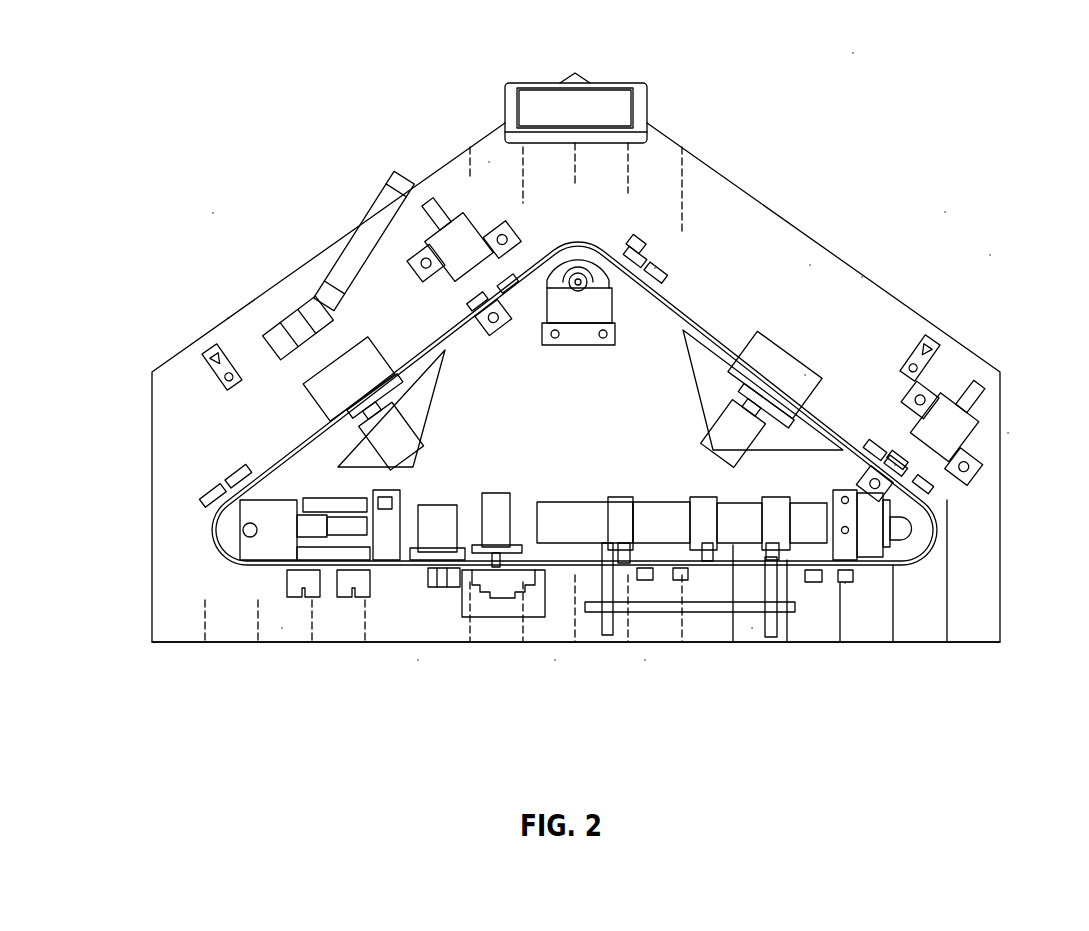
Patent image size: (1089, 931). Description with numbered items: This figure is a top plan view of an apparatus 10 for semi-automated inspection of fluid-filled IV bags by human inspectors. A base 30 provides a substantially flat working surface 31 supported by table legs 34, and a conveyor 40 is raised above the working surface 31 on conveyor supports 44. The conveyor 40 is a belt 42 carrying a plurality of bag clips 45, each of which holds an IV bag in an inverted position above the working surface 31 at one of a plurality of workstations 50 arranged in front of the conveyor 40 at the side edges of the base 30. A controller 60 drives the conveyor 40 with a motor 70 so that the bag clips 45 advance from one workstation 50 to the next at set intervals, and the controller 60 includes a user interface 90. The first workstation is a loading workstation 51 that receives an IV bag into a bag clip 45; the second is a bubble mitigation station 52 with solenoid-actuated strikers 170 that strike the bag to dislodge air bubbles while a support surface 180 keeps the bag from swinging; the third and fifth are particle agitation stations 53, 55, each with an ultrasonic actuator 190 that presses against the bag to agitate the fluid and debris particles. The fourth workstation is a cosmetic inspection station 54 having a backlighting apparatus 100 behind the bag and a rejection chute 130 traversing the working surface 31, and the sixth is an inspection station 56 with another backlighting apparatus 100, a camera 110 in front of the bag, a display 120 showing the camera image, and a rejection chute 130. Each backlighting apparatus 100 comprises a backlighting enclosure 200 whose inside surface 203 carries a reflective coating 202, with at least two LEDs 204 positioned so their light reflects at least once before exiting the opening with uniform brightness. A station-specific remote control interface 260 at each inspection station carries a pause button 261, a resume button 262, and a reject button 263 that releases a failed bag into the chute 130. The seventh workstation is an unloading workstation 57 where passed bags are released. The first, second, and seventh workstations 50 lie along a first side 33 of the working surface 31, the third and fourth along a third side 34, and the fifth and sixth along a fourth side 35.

The apparatus 10 is at (855, 52).
The base 30 is at (706, 115).
The working surface 31 is at (601, 218).
The first side 33 is at (868, 645).
The third side 34 is at (862, 277).
The fourth side 35 is at (228, 318).
The conveyor 40 is at (602, 473).
The belt 42 is at (907, 568).
The conveyor supports 44 is at (278, 505).
The bag clips 45 is at (655, 268).
The workstations 50 is at (990, 255).
The loading workstation 51 is at (418, 660).
The bubble mitigation station 52 is at (945, 212).
The particle agitation station 53 is at (1008, 434).
The cosmetic inspection station 54 is at (810, 265).
The particle agitation station 55 is at (489, 160).
The inspection station 56 is at (213, 213).
The unloading workstation 57 is at (282, 628).
The controller 60 is at (628, 88).
The motor 70 is at (577, 285).
The user interface 90 is at (523, 97).
The backlighting apparatus 100 is at (590, 404).
The camera 110 is at (290, 342).
The display 120 is at (388, 182).
The rejection chute 130 is at (322, 268).
The solenoid-actuated striker 170 is at (627, 558).
The support surface 180 is at (700, 627).
The ultrasonic actuator 190 is at (937, 445).
The backlighting enclosure 200 is at (692, 348).
The reflective coating 202 is at (590, 404).
The inside surface 203 is at (590, 404).
The LEDs 204 is at (407, 362).
The remote control interface 260 is at (559, 363).
The pause button 261 is at (559, 363).
The resume button 262 is at (559, 363).
The reject button 263 is at (130, 405).